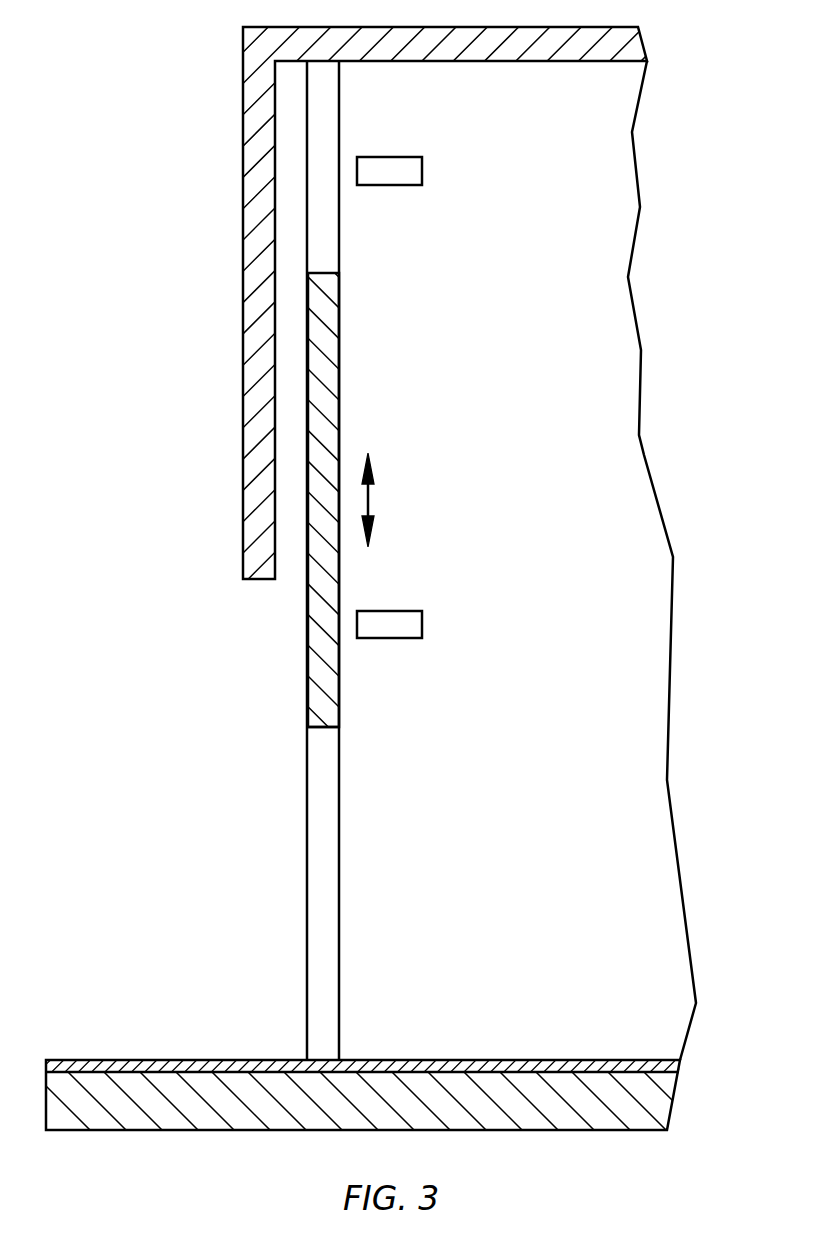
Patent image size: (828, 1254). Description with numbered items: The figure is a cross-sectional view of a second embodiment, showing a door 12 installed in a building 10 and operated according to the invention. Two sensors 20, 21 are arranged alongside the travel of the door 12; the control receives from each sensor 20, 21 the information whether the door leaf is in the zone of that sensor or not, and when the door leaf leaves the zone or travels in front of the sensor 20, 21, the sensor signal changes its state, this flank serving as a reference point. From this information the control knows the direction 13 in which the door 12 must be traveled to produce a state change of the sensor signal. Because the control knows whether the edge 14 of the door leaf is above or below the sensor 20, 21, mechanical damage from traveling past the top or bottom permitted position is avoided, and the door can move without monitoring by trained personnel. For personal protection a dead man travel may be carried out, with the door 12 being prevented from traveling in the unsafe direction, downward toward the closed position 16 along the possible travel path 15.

The building 10 is at (468, 61).
The door 12 is at (341, 322).
The direction 13 is at (370, 500).
The edge 14 is at (325, 727).
The possible travel path 15 is at (325, 870).
The closed position 16 is at (322, 1060).
The sensor 20 is at (422, 172).
The sensor 21 is at (422, 625).